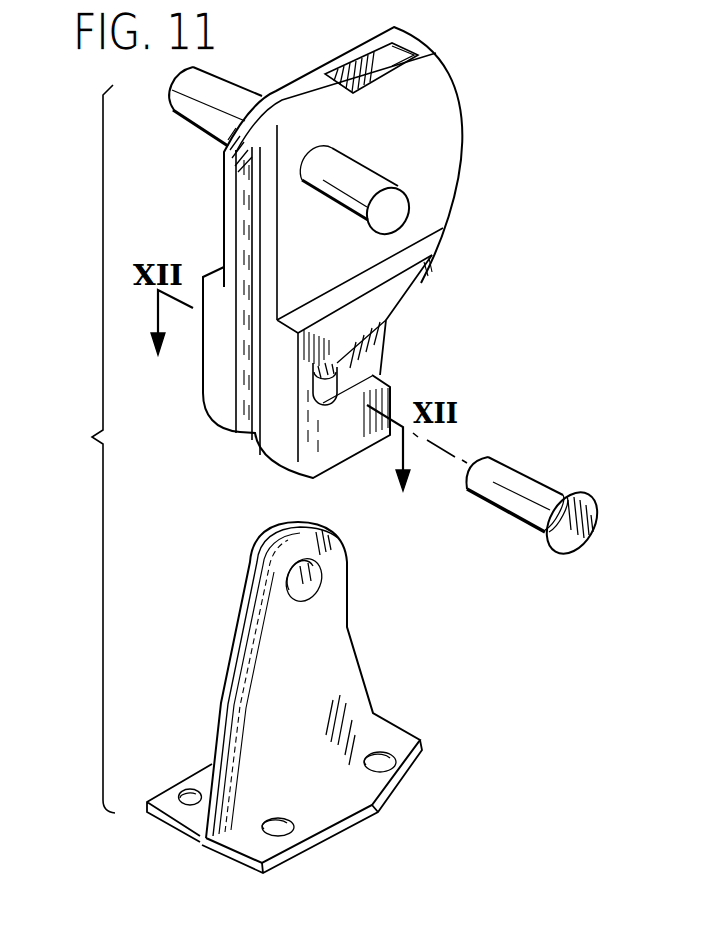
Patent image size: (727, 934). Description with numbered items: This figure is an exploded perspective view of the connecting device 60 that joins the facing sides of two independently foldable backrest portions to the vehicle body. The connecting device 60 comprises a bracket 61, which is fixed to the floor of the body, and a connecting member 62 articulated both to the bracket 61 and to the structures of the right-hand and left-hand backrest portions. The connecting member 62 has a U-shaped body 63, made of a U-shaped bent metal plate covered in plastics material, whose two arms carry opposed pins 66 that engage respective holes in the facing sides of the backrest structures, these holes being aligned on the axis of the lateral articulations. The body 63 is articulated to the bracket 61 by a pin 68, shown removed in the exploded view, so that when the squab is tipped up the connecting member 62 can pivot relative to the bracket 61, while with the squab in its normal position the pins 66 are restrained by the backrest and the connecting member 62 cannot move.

The connecting device 60 is at (470, 193).
The bracket 61 is at (337, 653).
The connecting member 62 is at (461, 99).
The U-shaped body 63 is at (405, 283).
The opposed pins 66 is at (190, 114).
The pin 68 is at (528, 492).